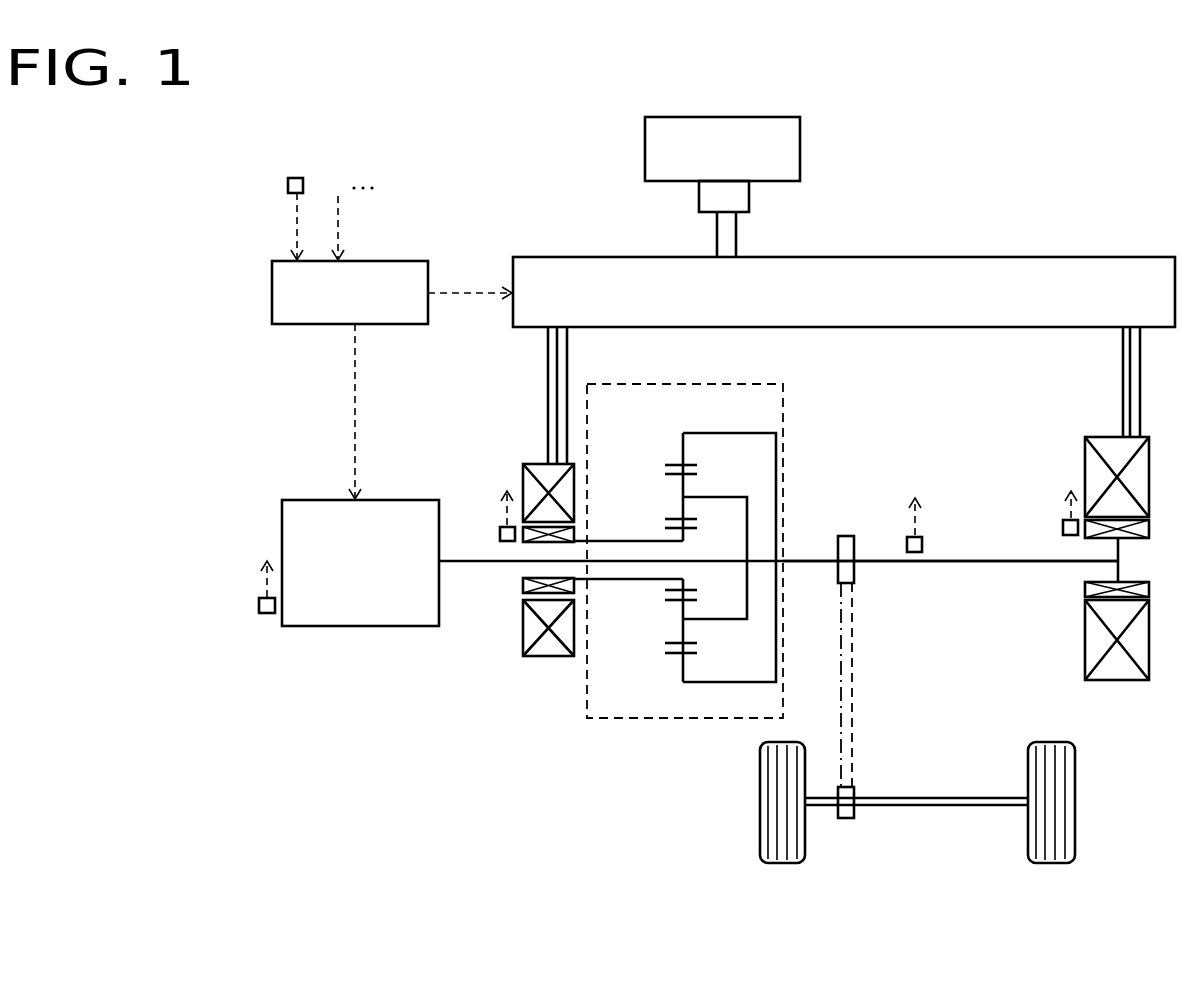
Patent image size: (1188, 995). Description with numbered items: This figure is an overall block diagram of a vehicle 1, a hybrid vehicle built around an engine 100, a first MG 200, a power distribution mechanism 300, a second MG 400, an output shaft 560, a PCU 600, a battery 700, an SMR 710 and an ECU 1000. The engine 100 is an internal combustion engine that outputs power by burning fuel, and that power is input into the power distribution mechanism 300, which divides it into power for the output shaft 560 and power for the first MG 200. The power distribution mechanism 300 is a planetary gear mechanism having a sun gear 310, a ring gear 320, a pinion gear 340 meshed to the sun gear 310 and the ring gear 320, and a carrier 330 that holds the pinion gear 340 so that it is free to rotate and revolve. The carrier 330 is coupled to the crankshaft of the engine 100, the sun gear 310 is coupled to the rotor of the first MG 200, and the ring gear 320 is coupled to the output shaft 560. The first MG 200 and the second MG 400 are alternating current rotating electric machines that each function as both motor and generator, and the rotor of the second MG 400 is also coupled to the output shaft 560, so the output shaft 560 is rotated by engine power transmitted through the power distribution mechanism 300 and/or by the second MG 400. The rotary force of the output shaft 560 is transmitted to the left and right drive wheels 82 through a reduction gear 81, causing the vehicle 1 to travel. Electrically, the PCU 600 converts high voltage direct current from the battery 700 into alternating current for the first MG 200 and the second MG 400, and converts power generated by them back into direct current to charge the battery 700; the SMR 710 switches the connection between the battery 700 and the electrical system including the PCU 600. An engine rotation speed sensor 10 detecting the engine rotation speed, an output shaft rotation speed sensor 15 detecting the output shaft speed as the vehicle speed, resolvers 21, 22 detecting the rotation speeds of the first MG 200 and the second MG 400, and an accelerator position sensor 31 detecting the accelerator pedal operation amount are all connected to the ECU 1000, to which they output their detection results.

The vehicle 1 is at (735, 60).
The engine rotation speed sensor 10 is at (268, 614).
The output shaft rotation speed sensor 15 is at (923, 540).
The resolver 21 is at (500, 533).
The resolver 22 is at (1062, 529).
The accelerator position sensor 31 is at (297, 176).
The reduction gear 81 is at (855, 688).
The drive wheels 82 is at (1075, 826).
The engine 100 is at (368, 626).
The first MG 200 is at (528, 462).
The power distribution mechanism 300 is at (685, 584).
The sun gear 310 is at (688, 531).
The ring gear 320 is at (670, 462).
The carrier 330 is at (737, 497).
The pinion gear 340 is at (668, 475).
The second MG 400 is at (1102, 433).
The propeller shaft (output shaft) 560 is at (982, 563).
The power control unit (PCU) 600 is at (886, 257).
The battery 700 is at (800, 142).
The system main relay (SMR) 710 is at (749, 200).
The ECU 1000 is at (378, 261).